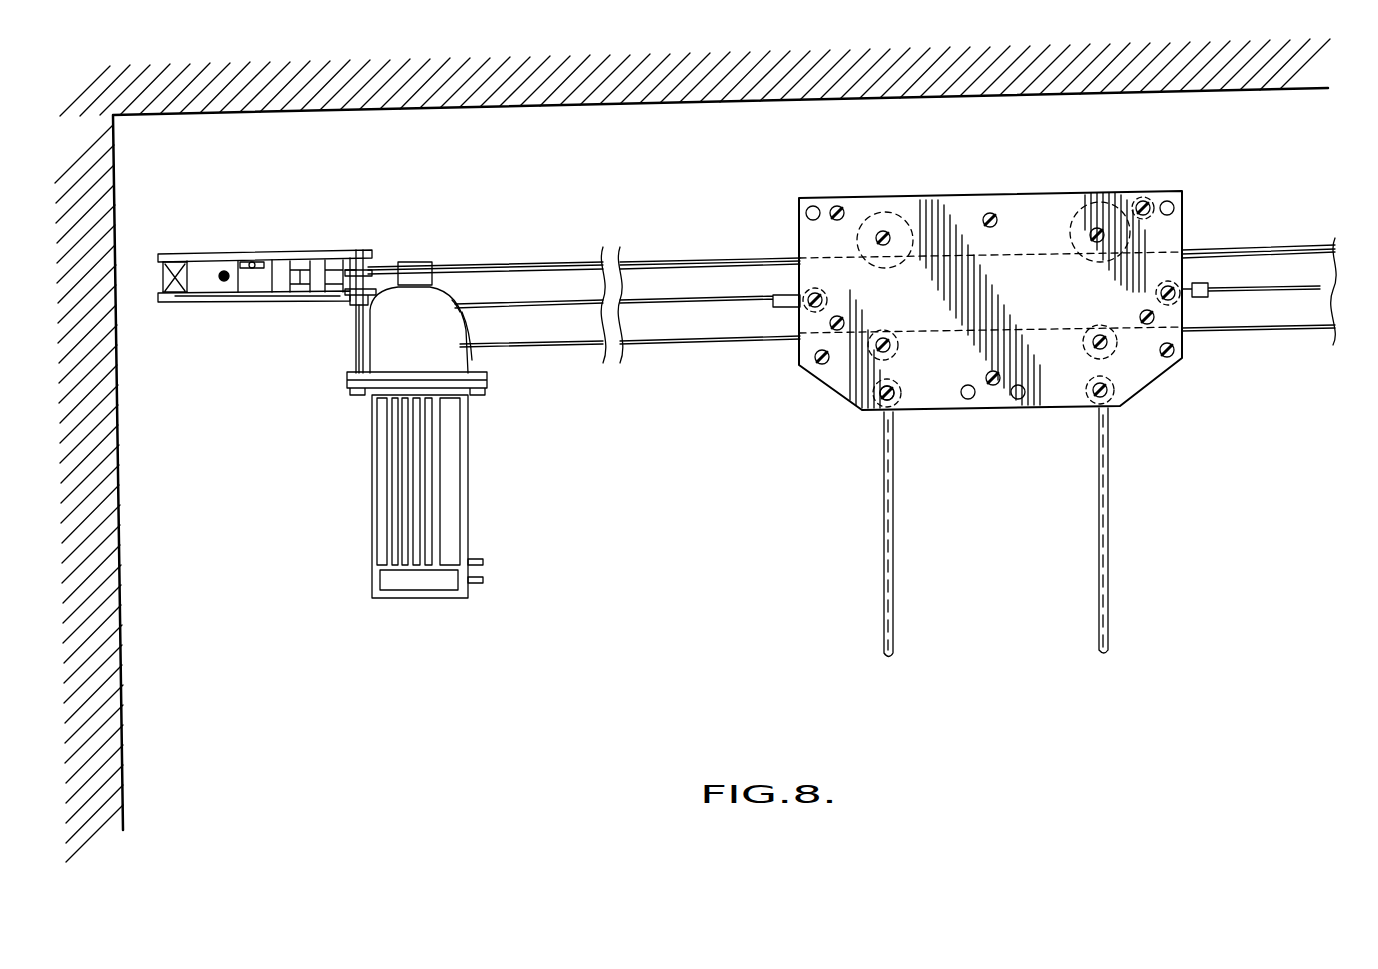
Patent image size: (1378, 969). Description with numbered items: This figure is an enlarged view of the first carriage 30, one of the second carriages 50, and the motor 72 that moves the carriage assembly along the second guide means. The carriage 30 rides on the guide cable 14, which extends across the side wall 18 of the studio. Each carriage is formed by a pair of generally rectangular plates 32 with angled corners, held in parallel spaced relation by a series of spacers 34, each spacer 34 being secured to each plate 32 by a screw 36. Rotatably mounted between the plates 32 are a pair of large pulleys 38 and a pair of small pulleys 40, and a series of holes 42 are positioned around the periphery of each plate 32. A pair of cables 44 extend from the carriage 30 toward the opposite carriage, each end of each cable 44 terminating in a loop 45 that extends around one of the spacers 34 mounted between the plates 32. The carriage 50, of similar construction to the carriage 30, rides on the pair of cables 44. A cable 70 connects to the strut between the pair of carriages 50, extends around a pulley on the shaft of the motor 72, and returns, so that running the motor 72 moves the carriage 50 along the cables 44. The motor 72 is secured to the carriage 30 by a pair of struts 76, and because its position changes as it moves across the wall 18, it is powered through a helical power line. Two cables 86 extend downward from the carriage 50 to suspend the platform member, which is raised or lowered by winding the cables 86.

The guide cable 14 is at (222, 280).
The side wall 18 is at (121, 560).
The carriage 30 is at (262, 237).
The plate 32 is at (356, 262).
The spacer 34 is at (354, 291).
The screw 36 is at (894, 394).
The large pulley 38 is at (200, 270).
The small pulley 40 is at (300, 276).
The hole 42 is at (812, 208).
The cable 44 is at (540, 266).
The loop 45 is at (378, 268).
The carriage 50 is at (1112, 178).
The cable 70 is at (716, 335).
The motor 72 is at (488, 496).
The strut 76 is at (354, 372).
The cable 86 is at (882, 445).